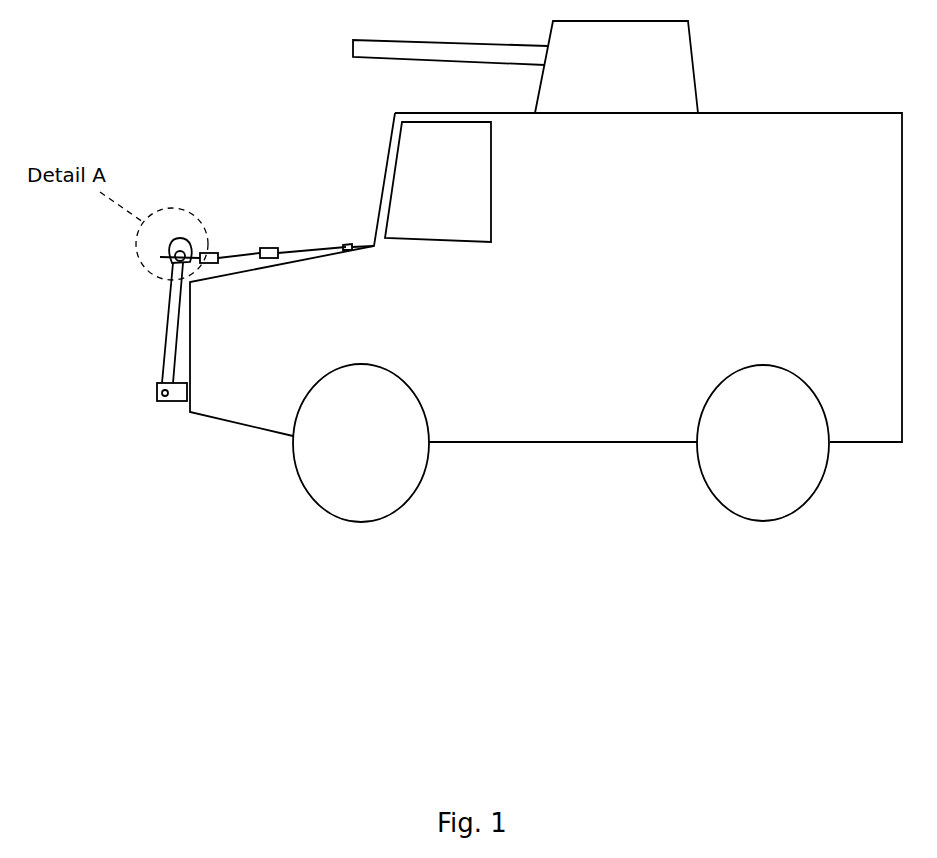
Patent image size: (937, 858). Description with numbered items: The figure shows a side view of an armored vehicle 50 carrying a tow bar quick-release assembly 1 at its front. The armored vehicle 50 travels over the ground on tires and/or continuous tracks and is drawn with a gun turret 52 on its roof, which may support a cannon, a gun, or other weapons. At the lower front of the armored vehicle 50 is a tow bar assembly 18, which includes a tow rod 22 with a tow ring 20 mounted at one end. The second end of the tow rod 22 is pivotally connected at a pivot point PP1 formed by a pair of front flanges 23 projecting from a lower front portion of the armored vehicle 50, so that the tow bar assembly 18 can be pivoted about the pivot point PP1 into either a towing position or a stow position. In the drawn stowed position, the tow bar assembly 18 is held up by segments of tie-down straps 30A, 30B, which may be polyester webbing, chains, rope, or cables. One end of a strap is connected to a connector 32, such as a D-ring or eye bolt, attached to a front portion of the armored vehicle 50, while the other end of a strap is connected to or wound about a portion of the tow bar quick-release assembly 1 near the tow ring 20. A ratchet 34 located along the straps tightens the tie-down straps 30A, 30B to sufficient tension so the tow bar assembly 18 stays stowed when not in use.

The tow bar quick-release assembly 1 is at (209, 213).
The tow bar assembly 18 is at (124, 321).
The tow ring 20 is at (178, 261).
The tow rod 22 is at (170, 340).
The front flanges 23 is at (180, 395).
The pivot point PP1 is at (163, 395).
The tie-down strap 30A is at (235, 253).
The tie-down strap 30B is at (300, 252).
The connector 32 is at (346, 246).
The ratchet 34 is at (268, 248).
The armored vehicle 50 is at (658, 264).
The gun turret 52 is at (630, 84).